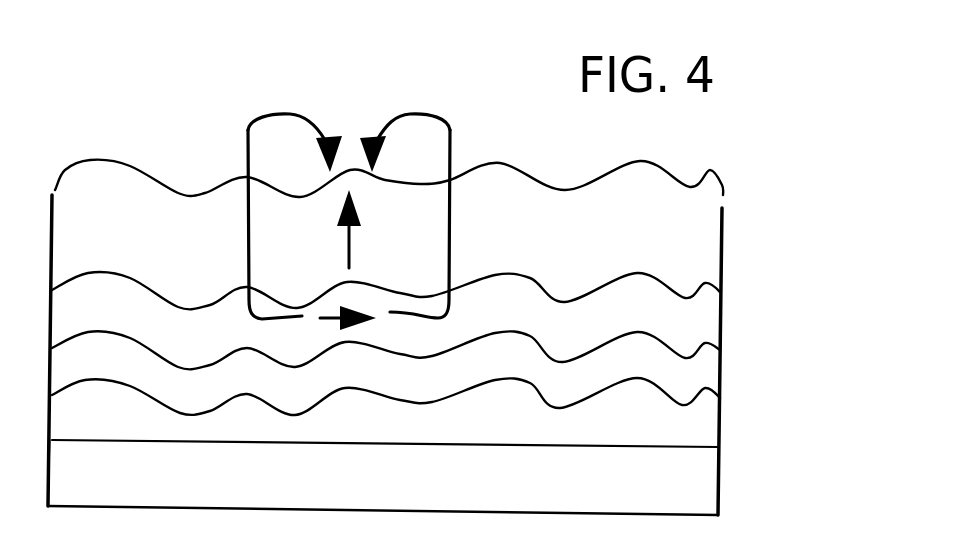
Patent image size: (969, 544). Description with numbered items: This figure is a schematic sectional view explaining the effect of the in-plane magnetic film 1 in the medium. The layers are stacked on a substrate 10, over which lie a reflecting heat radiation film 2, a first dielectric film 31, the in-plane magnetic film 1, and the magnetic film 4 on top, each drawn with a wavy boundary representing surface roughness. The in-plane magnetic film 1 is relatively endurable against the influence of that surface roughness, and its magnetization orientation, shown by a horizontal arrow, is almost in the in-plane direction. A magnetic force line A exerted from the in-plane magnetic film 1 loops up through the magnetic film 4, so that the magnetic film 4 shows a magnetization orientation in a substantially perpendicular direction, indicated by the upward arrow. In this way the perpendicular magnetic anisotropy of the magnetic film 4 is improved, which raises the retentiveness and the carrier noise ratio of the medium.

The magnetic film 4 is at (688, 235).
The in-plane magnetic film 1 is at (700, 319).
The first dielectric film 31 is at (695, 376).
The reflecting heat radiation film 2 is at (700, 428).
The substrate 10 is at (705, 480).
The magnetic force line A is at (451, 150).